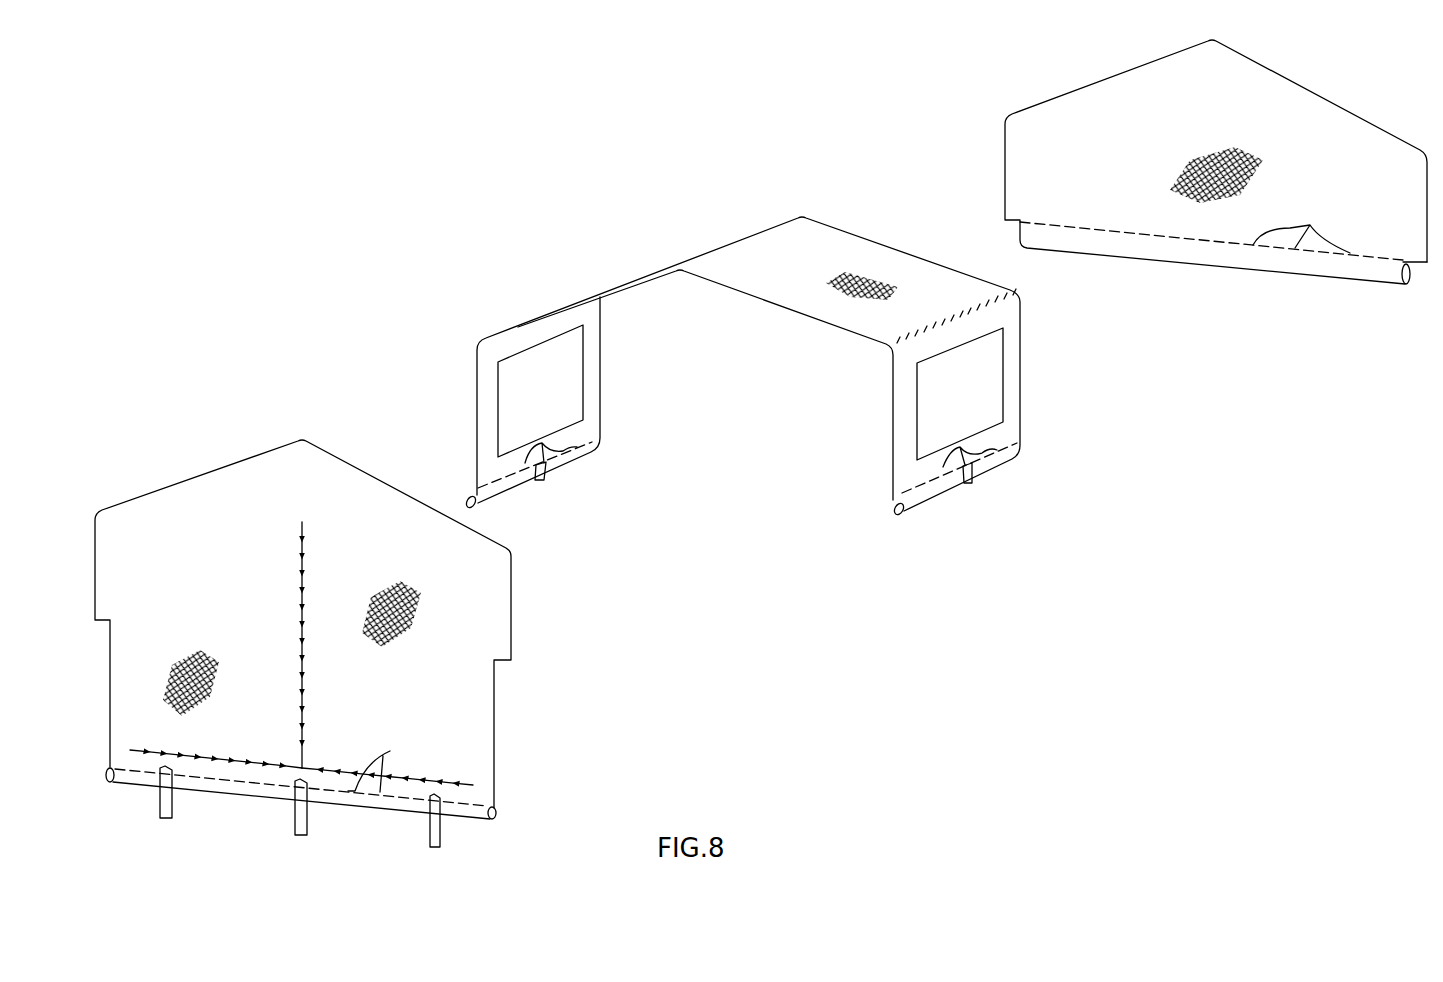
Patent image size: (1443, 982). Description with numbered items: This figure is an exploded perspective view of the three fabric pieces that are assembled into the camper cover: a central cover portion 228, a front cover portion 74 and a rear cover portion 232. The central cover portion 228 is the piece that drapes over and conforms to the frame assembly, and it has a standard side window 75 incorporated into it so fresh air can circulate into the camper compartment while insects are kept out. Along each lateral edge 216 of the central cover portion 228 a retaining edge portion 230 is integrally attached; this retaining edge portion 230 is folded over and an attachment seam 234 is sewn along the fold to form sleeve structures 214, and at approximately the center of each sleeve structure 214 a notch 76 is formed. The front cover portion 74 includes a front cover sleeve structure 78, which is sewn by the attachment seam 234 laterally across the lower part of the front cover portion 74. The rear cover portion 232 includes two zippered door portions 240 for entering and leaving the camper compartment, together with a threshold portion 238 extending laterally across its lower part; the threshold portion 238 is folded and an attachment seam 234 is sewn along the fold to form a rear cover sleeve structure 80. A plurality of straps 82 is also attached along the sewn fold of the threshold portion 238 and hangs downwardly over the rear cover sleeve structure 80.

The front cover portion 74 is at (1115, 85).
The standard side window 75 is at (528, 365).
The notch 76 is at (543, 477).
The front cover sleeve structure 78 is at (1212, 255).
The rear cover sleeve structure 80 is at (323, 798).
The straps 82 is at (297, 800).
The sleeve structures 214 is at (587, 452).
The lateral edge 216 is at (1008, 427).
The central cover portion 228 is at (752, 243).
The retaining edge portion 230 is at (1017, 428).
The rear cover portion 232 is at (267, 467).
The attachment seam 234 is at (849, 492).
The threshold portion 238 is at (135, 760).
The zippered door portions 240 is at (285, 753).